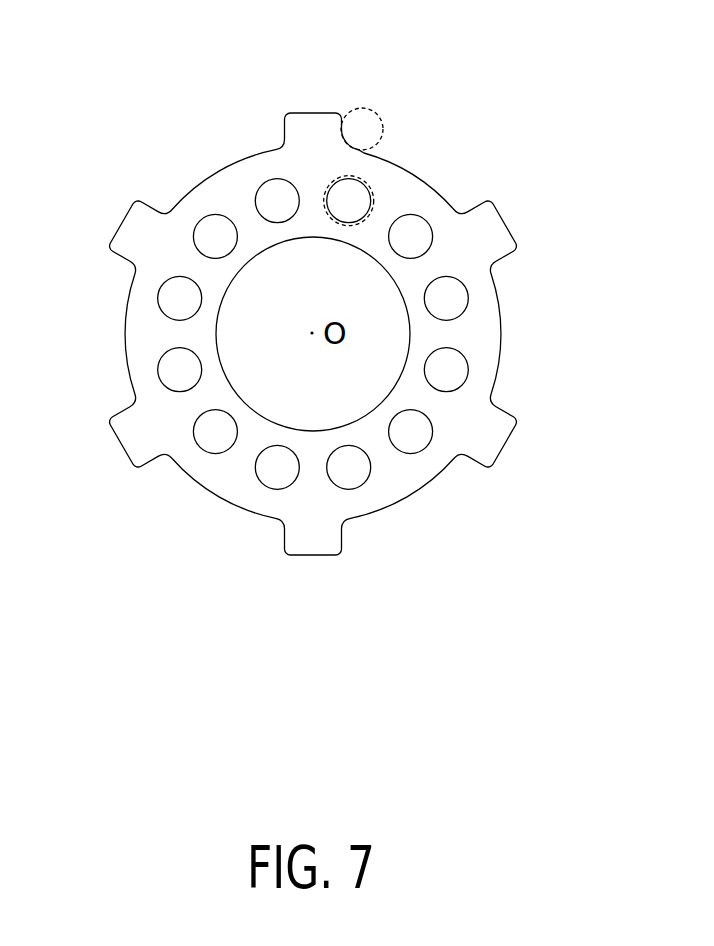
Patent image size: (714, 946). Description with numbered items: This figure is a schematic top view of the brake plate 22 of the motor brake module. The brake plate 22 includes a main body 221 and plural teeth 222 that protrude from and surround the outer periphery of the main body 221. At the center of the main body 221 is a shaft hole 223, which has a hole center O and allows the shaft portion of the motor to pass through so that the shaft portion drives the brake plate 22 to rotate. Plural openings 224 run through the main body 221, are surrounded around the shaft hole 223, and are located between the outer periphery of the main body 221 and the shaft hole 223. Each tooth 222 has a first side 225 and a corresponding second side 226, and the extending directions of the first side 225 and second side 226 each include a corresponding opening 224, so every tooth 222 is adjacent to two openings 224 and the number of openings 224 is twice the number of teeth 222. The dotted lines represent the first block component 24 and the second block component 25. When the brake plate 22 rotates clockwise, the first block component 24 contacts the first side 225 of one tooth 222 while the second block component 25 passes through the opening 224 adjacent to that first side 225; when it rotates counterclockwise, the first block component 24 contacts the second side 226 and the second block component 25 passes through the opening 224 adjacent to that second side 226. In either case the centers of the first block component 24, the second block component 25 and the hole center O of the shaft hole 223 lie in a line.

The brake plate 22 is at (527, 170).
The main body 221 is at (227, 195).
The teeth 222 is at (313, 133).
The shaft hole 223 is at (260, 357).
The openings 224 is at (350, 138).
The first side 225 is at (350, 125).
The second side 226 is at (282, 128).
The first block component 24 is at (350, 124).
The second block component 25 is at (372, 195).